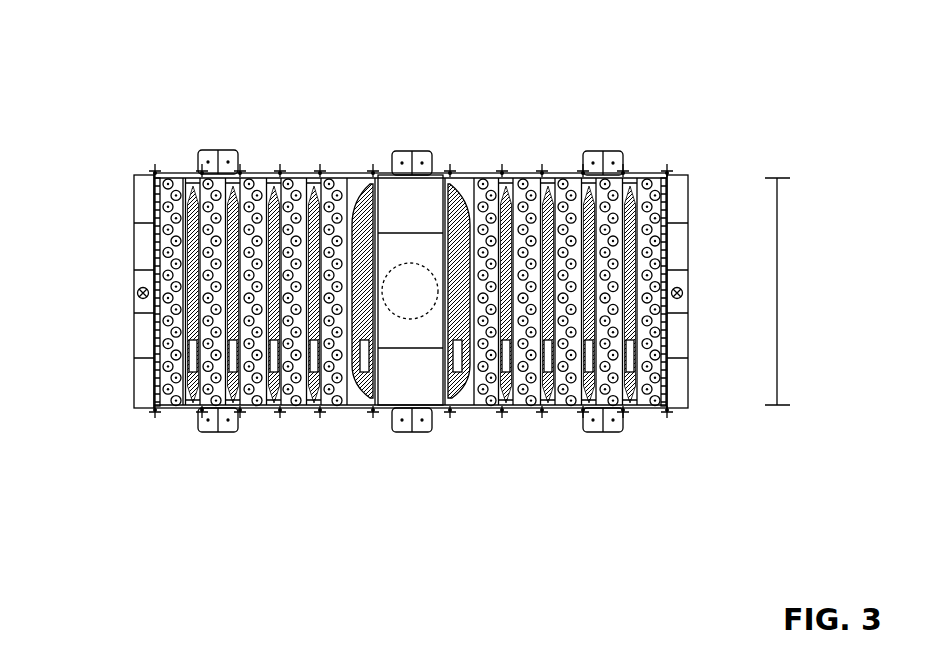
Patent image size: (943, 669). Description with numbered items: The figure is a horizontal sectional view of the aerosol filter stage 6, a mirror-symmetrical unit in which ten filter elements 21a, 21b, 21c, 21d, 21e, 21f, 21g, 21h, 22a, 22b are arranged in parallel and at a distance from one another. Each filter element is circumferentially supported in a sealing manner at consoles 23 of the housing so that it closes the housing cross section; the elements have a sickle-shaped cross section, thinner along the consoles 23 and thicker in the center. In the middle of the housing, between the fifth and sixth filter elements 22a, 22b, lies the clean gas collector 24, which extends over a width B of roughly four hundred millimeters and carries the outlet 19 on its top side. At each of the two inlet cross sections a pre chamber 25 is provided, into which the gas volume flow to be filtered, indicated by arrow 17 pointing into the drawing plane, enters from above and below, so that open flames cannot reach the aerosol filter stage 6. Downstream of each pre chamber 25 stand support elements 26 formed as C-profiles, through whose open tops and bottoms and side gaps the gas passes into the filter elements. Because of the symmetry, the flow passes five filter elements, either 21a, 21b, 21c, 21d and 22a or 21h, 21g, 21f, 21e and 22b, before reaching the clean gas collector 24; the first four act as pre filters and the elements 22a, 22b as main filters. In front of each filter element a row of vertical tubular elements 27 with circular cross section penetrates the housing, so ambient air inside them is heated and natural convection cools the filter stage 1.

The plate stack 1 is at (672, 412).
The aerosol filter stage 6 is at (594, 80).
The arrow 17 is at (134, 296).
The outlet 19 is at (423, 278).
The filter element 21a is at (185, 410).
The filter element 21b is at (222, 412).
The filter element 21c is at (262, 412).
The filter element 21d is at (306, 412).
The filter element 21e is at (503, 412).
The filter element 21f is at (545, 412).
The filter element 21g is at (588, 412).
The filter element 21h is at (630, 412).
The filter element 22a is at (357, 412).
The filter element 22b is at (454, 412).
The console 23 is at (230, 173).
The clean gas collector 24 is at (408, 370).
The pre chamber 25 is at (680, 178).
The support element 26 is at (157, 172).
The tubular element 27 is at (184, 172).
The width B is at (777, 258).